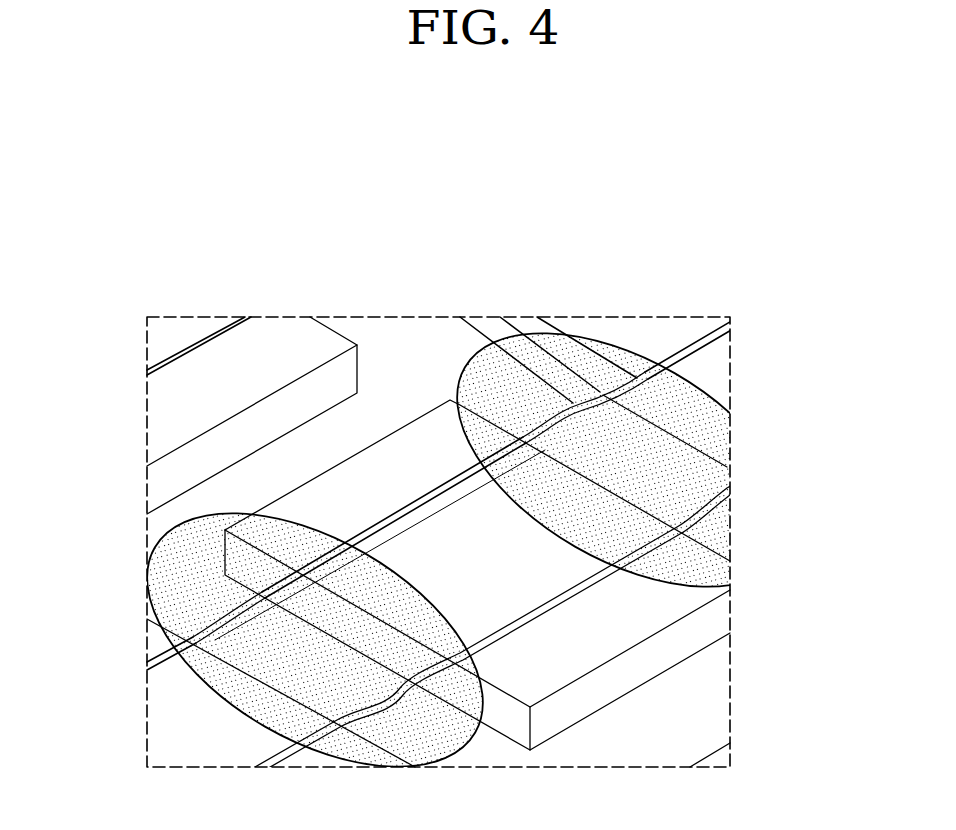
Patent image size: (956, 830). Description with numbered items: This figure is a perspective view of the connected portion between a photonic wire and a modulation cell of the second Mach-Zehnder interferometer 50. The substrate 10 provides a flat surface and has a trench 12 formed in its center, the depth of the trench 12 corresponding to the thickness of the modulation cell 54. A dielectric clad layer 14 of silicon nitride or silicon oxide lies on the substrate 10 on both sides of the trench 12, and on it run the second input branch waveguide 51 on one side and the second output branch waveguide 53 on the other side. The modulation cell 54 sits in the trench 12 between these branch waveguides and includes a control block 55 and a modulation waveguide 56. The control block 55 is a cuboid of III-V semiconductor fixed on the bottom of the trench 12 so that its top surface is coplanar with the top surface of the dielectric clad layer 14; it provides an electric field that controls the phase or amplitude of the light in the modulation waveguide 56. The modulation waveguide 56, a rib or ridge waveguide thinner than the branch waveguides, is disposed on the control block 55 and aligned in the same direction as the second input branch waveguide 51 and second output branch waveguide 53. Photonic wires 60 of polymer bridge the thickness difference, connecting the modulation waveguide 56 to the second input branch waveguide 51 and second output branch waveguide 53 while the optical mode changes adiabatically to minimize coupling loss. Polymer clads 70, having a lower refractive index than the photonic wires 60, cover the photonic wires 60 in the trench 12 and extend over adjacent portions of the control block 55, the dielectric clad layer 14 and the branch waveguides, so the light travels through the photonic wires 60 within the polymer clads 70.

The substrate 10 is at (718, 690).
The trench 12 is at (288, 455).
The dielectric clad layer 14 is at (722, 432).
The second Mach-Zehnder interferometer 50 is at (715, 182).
The second input branch waveguide 51 is at (148, 658).
The second output branch waveguide 53 is at (660, 363).
The modulation cell 54 is at (380, 415).
The control block 55 is at (378, 457).
The modulation waveguide 56 is at (433, 490).
The photonic wire 60 is at (573, 407).
The polymer clad 70 is at (207, 518).